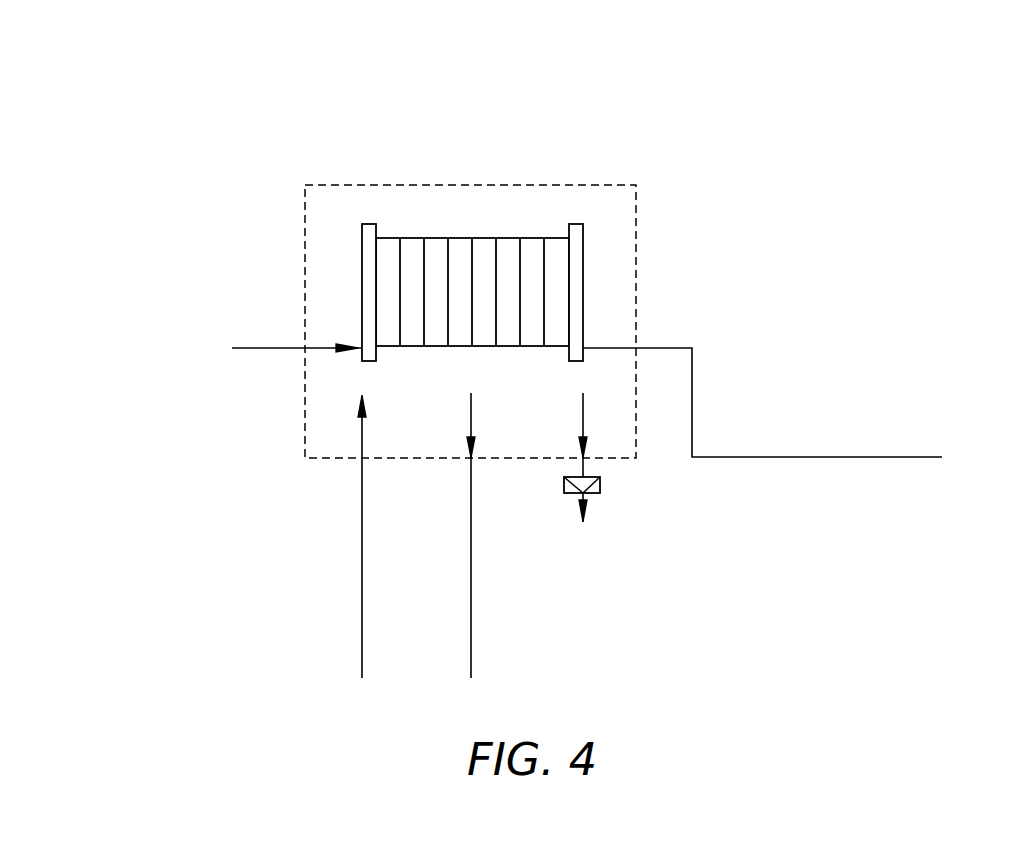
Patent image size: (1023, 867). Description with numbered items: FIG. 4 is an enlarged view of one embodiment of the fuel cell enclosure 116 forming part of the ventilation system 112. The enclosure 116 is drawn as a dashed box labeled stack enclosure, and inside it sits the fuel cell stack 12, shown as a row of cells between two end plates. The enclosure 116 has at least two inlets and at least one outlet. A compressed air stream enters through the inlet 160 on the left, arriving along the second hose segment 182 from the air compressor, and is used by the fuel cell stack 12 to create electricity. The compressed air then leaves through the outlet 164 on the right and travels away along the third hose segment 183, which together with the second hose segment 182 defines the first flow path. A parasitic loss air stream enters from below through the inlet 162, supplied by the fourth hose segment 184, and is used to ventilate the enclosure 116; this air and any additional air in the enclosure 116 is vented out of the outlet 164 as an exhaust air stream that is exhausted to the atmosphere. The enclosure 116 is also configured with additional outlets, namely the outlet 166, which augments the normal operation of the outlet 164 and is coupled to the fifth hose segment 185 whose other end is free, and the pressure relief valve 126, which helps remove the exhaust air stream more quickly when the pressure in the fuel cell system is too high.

The ventilation system 112 is at (272, 112).
The fuel cell enclosure 116 is at (636, 221).
The fuel cell stack 12 is at (400, 238).
The fuel cell enclosure inlet 160 is at (305, 348).
The second hose segment 182 is at (254, 349).
The fuel cell enclosure outlet 164 is at (636, 348).
The third hose segment 183 is at (811, 457).
The fuel cell enclosure inlet 162 is at (361, 467).
The fourth hose segment 184 is at (362, 625).
The fifth hose segment 185 is at (471, 645).
The outlet 166 is at (471, 458).
The pressure relief valve 126 is at (601, 490).